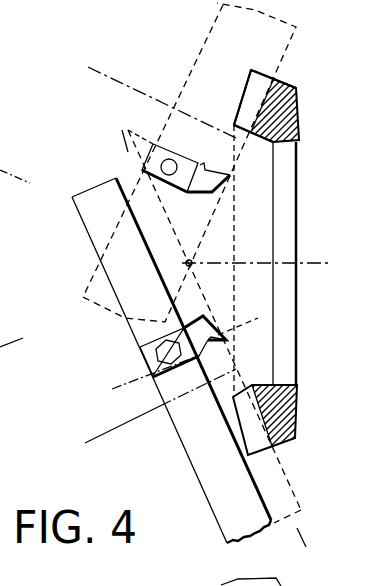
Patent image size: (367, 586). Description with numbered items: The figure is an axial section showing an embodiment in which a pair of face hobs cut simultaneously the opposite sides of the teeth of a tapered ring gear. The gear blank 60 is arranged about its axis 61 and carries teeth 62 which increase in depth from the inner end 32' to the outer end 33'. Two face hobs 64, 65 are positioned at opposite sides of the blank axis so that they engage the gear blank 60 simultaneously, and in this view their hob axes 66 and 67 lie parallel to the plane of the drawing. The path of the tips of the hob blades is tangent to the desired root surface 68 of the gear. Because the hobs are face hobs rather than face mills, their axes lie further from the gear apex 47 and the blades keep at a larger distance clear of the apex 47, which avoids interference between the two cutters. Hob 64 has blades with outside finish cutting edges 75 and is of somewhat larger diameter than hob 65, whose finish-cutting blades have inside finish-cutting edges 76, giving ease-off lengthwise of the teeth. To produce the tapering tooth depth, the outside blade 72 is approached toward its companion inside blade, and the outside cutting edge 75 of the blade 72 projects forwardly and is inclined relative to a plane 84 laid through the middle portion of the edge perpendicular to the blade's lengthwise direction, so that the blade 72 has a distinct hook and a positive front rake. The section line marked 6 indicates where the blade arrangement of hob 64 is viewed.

The gear blank 60 is at (274, 110).
The teeth 62 is at (262, 88).
The root surface 68 is at (266, 102).
The outer end 33' is at (273, 66).
The inner end 32' is at (257, 149).
The axis 61 is at (299, 263).
The gear apex 47 is at (176, 259).
The face hob 65 is at (222, 70).
The hob axis 67 is at (101, 72).
The plane 84 is at (243, 326).
The inside finish-cutting edges 76 is at (203, 168).
The outside blade 72 is at (198, 325).
The outside finish cutting edges 75 is at (222, 340).
The face hob 64 is at (163, 385).
The hob axis 66 is at (148, 413).
The section line 6- 6 is at (88, 153).